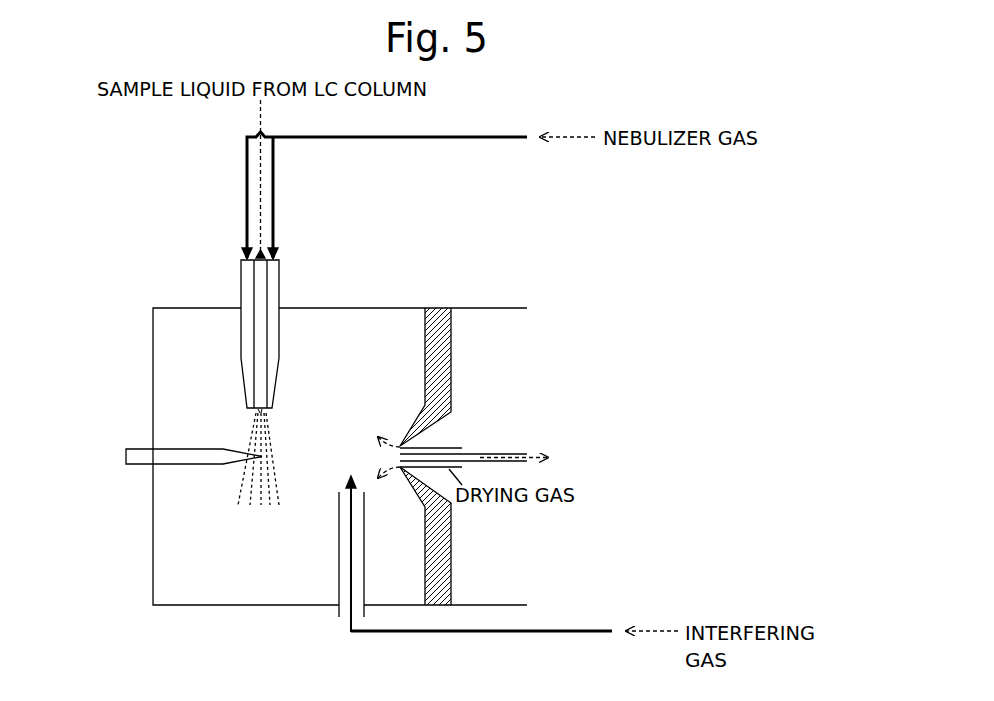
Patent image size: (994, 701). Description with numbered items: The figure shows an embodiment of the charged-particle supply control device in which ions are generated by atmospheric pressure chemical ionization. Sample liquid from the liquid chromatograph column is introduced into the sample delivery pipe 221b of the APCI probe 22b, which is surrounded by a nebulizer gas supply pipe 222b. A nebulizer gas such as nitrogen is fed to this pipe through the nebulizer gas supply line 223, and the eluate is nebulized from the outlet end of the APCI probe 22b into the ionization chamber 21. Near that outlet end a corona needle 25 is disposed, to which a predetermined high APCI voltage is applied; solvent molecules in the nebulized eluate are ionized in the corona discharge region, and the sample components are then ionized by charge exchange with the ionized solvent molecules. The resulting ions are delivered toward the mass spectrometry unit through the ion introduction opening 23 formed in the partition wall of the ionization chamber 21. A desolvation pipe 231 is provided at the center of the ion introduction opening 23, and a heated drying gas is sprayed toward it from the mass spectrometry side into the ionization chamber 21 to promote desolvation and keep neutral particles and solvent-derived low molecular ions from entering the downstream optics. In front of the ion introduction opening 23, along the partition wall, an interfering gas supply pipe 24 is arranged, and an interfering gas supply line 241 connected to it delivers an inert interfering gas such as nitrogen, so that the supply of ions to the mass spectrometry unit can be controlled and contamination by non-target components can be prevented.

The ionization chamber 21 is at (177, 606).
The APCI probe 22b is at (280, 263).
The sample delivery pipe 221b is at (257, 367).
The nebulizer gas supply pipe 222b is at (273, 337).
The nebulizer gas supply line 223 is at (453, 137).
The ion introduction opening 23 is at (397, 443).
The desolvation pipe 231 is at (473, 450).
The interfering gas supply pipe 24 is at (338, 555).
The interfering gas supply line 241 is at (535, 631).
The corona needle 25 is at (133, 449).